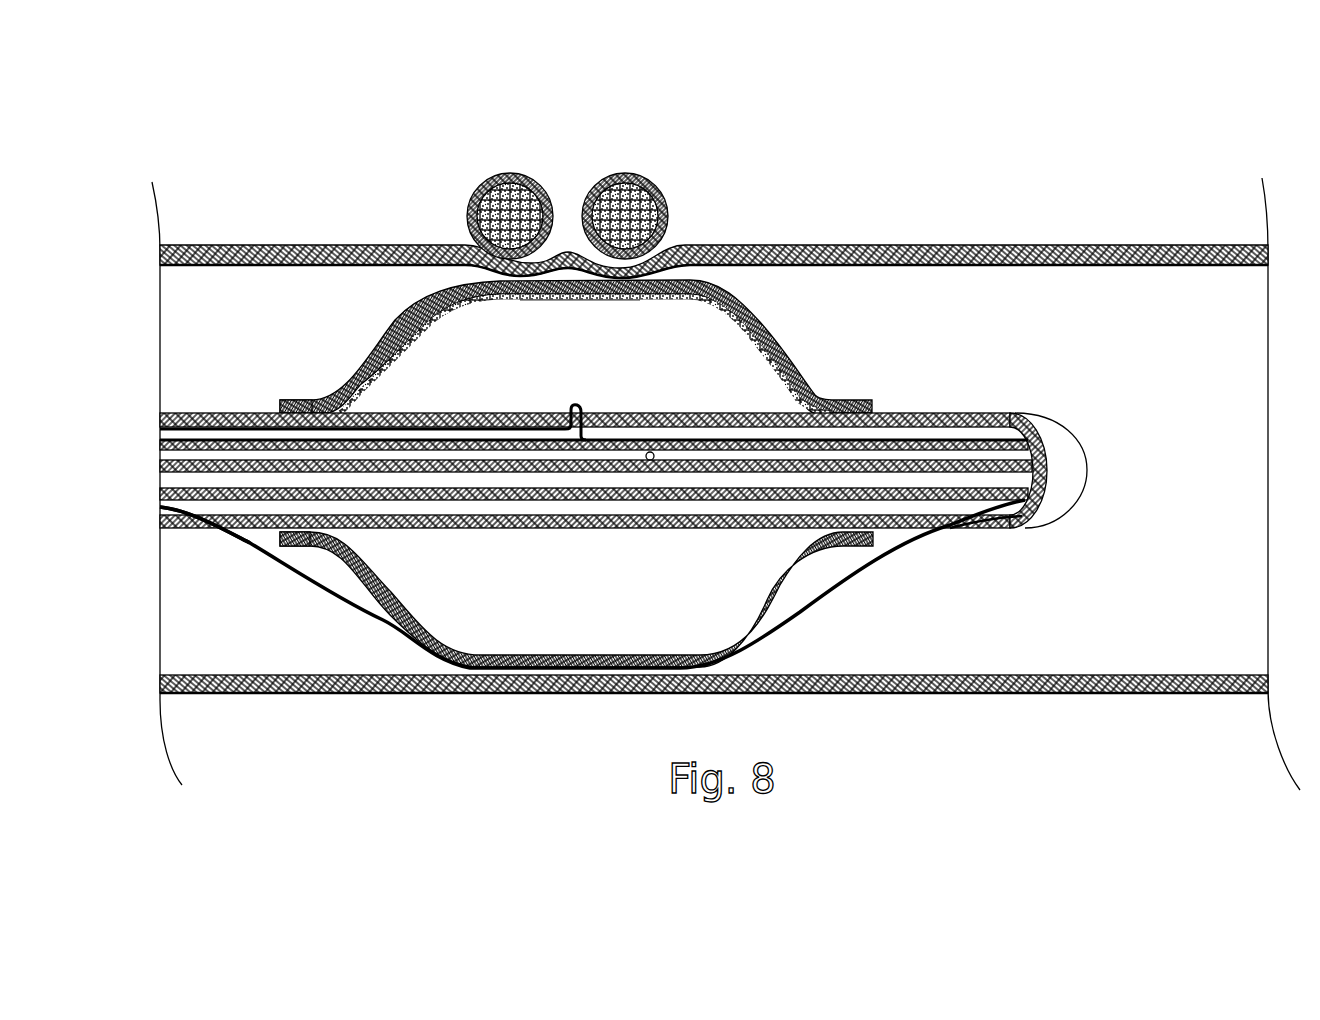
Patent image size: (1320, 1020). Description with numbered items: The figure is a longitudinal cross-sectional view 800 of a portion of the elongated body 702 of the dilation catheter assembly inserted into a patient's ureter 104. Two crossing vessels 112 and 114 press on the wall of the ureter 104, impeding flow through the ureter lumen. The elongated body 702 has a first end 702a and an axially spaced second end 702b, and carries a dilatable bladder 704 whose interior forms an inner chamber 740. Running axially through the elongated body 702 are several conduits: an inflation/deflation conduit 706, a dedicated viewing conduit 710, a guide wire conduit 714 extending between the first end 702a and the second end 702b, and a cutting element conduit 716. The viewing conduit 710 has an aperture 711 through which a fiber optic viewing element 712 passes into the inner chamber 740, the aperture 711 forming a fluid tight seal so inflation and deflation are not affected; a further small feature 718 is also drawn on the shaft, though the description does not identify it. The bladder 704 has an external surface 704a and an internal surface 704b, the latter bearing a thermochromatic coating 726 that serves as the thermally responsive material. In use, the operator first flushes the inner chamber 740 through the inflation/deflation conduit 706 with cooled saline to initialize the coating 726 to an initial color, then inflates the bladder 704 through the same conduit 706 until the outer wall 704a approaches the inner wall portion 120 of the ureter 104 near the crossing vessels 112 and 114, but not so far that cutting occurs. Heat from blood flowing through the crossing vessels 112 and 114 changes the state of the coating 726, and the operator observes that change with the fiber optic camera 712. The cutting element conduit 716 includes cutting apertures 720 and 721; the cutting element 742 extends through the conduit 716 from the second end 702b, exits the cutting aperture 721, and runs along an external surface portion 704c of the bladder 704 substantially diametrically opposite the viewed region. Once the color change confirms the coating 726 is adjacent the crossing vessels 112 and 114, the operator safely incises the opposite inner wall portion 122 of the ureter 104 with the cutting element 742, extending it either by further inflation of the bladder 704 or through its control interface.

The ureter 104 is at (243, 243).
The crossing vessel 112 is at (640, 173).
The crossing vessel 114 is at (525, 173).
The inner wall portion 120 is at (1048, 267).
The inner wall portion 122 is at (1048, 660).
The elongated body 702 is at (1080, 435).
The first end 702a is at (240, 400).
The second end 702b is at (1008, 412).
The dilatable bladder 704 is at (578, 345).
The external surface 704a is at (728, 292).
The internal surface 704b is at (727, 303).
The external surface portion 704c is at (783, 597).
The inflation/deflation conduit 706 is at (983, 453).
The dedicated viewing conduit 710 is at (917, 432).
The aperture 711 is at (588, 430).
The fiber optic viewing element 712 is at (574, 406).
The guide wire conduit 714 is at (1013, 485).
The cutting element conduit 716 is at (502, 506).
The electrode lead 718 is at (651, 451).
The cutting aperture 720 is at (225, 533).
The cutting aperture 721 is at (947, 530).
The thermochromatic coating 726 is at (570, 298).
The inner chamber 740 is at (493, 388).
The cutting element 742 is at (850, 580).
The longitudinal cross-sectional view 800 is at (963, 128).